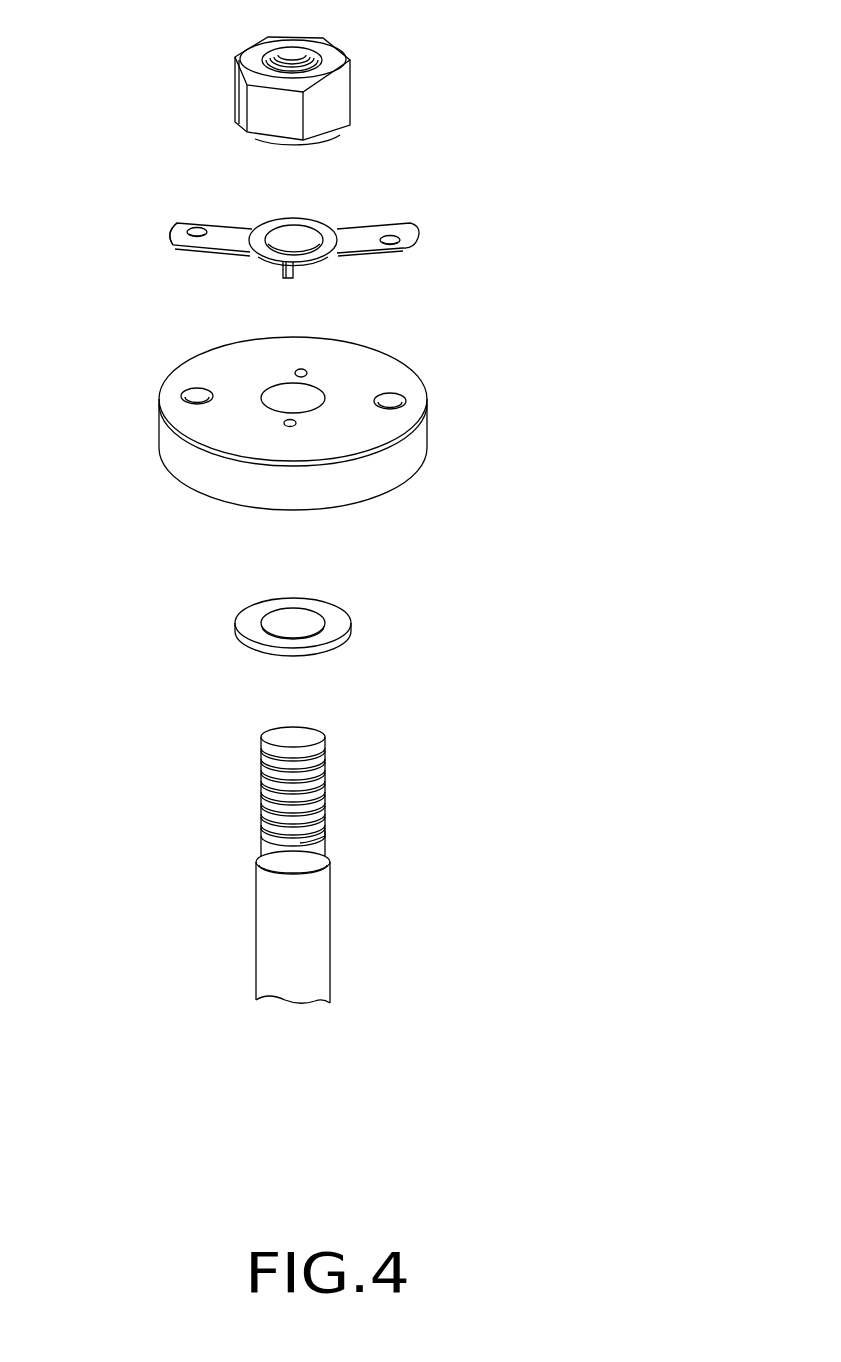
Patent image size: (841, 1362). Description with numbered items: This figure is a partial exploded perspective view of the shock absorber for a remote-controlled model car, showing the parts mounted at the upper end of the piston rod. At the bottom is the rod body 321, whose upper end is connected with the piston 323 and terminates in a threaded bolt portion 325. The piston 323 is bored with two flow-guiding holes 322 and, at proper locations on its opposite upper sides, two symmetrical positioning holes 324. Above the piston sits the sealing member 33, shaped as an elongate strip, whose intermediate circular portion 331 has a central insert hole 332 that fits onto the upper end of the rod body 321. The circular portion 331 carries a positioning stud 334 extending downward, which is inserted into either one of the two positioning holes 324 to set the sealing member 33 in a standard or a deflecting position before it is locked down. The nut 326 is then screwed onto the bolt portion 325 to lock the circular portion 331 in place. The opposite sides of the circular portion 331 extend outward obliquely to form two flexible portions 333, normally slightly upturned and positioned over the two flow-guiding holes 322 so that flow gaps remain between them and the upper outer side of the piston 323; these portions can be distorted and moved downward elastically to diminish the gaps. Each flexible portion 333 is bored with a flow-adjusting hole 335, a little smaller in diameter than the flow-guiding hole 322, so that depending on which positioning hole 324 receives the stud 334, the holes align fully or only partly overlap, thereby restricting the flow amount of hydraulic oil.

The nut 326 is at (352, 65).
The sealing member 33 is at (305, 174).
The circular portion 331 is at (317, 217).
The insert hole 332 is at (293, 242).
The flexible portion 333 is at (223, 225).
The positioning stud 334 is at (290, 278).
The flow-adjusting hole 335 is at (172, 242).
The flow-guiding hole 322 is at (297, 432).
The piston 323 is at (428, 430).
The positioning hole 324 is at (296, 423).
The bolt portion 325 is at (327, 767).
The rod body 321 is at (300, 952).